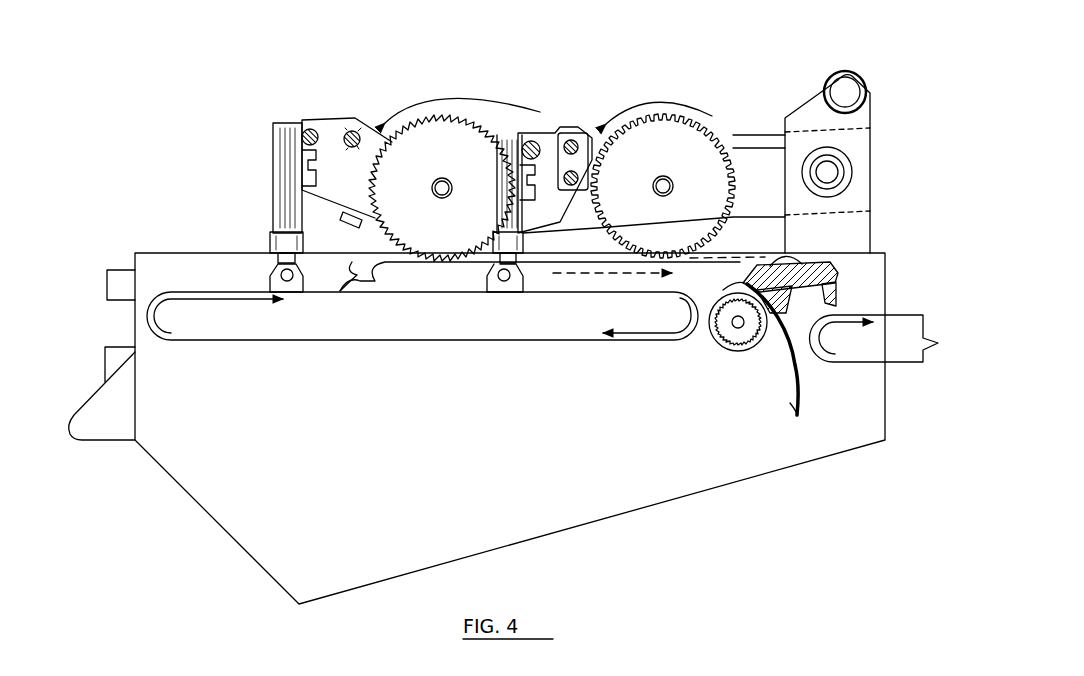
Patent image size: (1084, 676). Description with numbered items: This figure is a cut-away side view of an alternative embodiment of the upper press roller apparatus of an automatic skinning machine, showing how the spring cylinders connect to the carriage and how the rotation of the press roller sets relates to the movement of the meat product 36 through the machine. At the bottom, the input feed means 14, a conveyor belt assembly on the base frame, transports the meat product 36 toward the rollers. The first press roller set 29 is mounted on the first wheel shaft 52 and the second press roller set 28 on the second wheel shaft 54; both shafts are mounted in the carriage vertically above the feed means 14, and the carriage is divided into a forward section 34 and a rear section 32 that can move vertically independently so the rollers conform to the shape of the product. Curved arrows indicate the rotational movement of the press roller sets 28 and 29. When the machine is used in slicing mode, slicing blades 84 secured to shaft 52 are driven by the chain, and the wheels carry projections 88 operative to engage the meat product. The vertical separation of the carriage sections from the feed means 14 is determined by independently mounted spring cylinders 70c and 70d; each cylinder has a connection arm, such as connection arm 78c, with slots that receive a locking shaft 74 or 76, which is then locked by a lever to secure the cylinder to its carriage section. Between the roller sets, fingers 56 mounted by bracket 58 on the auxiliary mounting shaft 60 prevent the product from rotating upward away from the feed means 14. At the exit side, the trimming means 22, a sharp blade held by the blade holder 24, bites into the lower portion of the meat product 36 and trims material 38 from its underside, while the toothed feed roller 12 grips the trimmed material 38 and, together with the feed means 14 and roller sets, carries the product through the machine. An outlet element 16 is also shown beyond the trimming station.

The feed roller 12 is at (708, 352).
The input feed means 14 is at (170, 313).
The outlet conveyor 16 is at (900, 330).
The trimming means 22 is at (798, 320).
The blade holder 24 is at (856, 278).
The second press roller set 28 is at (668, 90).
The first press roller set 29 is at (410, 100).
The carriage rear section 32 is at (762, 142).
The carriage forward section 34 is at (340, 158).
The meat product 36 is at (358, 281).
The trimmed material 38 is at (790, 403).
The first wheel shaft 52 is at (438, 192).
The second wheel shaft 54 is at (669, 181).
The fingers 56 is at (550, 134).
The bracket 58 is at (581, 130).
The auxiliary mounting shaft 60 is at (568, 139).
The spring cylinder 70c is at (270, 149).
The spring cylinder 70d is at (520, 133).
The locking shaft 74 is at (341, 166).
The locking shaft 76 is at (524, 133).
The connection arm 78c is at (306, 125).
The slicing blades 84 is at (442, 113).
The projections 88 is at (634, 120).